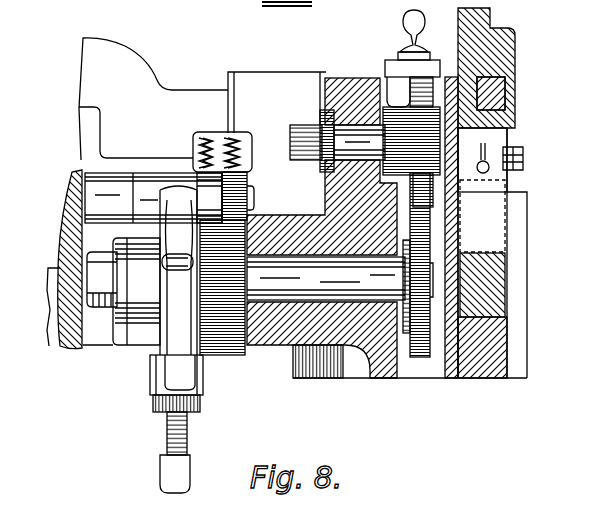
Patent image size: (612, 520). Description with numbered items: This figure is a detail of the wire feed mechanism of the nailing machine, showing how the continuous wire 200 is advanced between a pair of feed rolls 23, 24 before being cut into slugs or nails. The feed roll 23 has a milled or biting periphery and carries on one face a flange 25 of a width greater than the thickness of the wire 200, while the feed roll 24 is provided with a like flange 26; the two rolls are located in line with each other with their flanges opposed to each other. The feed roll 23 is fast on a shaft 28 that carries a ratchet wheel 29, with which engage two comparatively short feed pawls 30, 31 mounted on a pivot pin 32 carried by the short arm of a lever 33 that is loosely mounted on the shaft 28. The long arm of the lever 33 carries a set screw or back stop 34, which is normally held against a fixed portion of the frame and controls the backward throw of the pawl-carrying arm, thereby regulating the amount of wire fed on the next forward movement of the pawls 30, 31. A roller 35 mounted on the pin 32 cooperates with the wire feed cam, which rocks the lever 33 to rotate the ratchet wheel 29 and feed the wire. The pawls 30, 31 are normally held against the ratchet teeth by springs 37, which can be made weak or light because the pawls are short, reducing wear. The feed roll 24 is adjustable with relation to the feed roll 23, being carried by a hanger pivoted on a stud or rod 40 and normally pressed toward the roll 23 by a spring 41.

The feed roll 23 is at (422, 342).
The feed roll 24 is at (429, 62).
The flange 25 is at (408, 358).
The flange 26 is at (424, 204).
The shaft 28 is at (286, 305).
The ratchet wheel 29 is at (233, 356).
The feed pawl 30 is at (240, 193).
The feed pawl 31 is at (192, 172).
The pivot pin 32 is at (255, 203).
The lever 33 is at (150, 187).
The set screw 34 is at (168, 430).
The roller 35 is at (88, 173).
The springs 37 is at (236, 139).
The stud or rod 40 is at (347, 128).
The spring 41 is at (388, 72).
The wire 200 is at (428, 222).